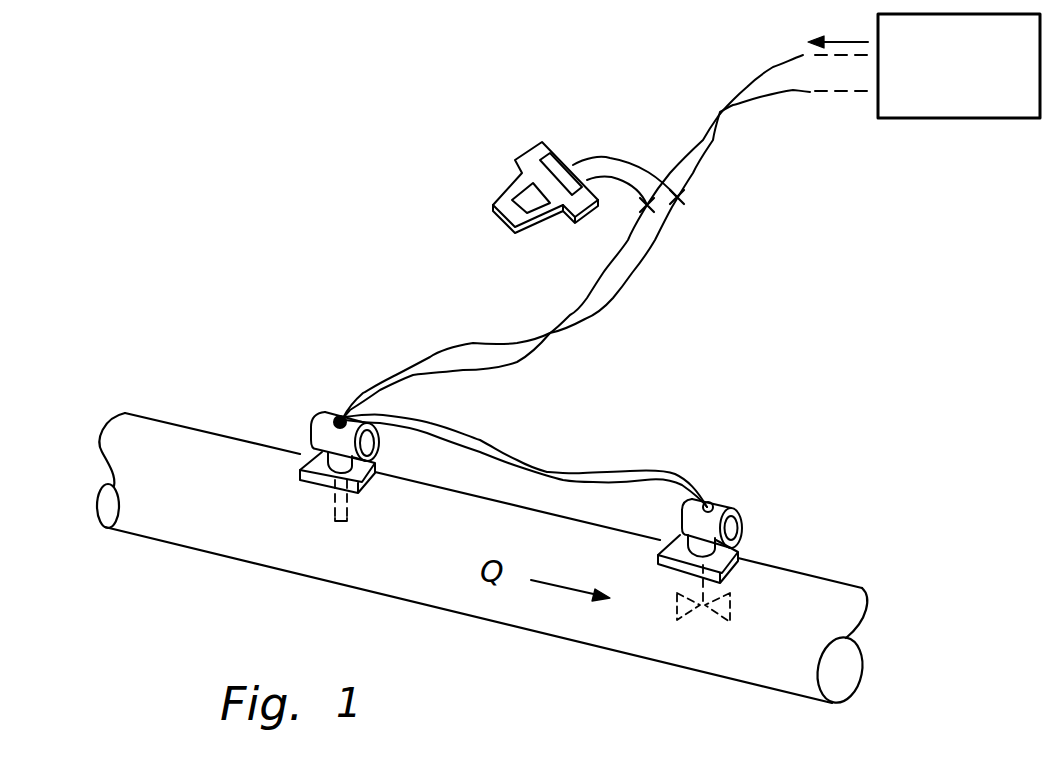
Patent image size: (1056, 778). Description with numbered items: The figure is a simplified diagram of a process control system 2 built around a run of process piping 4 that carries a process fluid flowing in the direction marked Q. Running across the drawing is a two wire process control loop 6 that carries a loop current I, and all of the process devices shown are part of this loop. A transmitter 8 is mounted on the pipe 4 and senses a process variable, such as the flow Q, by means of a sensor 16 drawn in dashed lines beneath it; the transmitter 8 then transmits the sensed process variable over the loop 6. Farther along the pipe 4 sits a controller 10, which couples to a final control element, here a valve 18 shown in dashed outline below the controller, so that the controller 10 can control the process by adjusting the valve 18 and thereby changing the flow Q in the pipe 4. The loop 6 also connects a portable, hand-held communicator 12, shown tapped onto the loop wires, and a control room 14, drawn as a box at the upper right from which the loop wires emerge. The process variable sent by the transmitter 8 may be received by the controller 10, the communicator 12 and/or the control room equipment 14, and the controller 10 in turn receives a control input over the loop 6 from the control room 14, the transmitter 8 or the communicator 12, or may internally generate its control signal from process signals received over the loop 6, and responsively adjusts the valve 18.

The process control system 2 is at (195, 252).
The process piping 4 is at (168, 518).
The two wire process control loop 6 is at (620, 257).
The transmitter 8 is at (383, 449).
The controller 10 is at (726, 505).
The communicator 12 is at (517, 158).
The control room 14 is at (905, 118).
The sensor 16 is at (349, 517).
The valve 18 is at (730, 605).